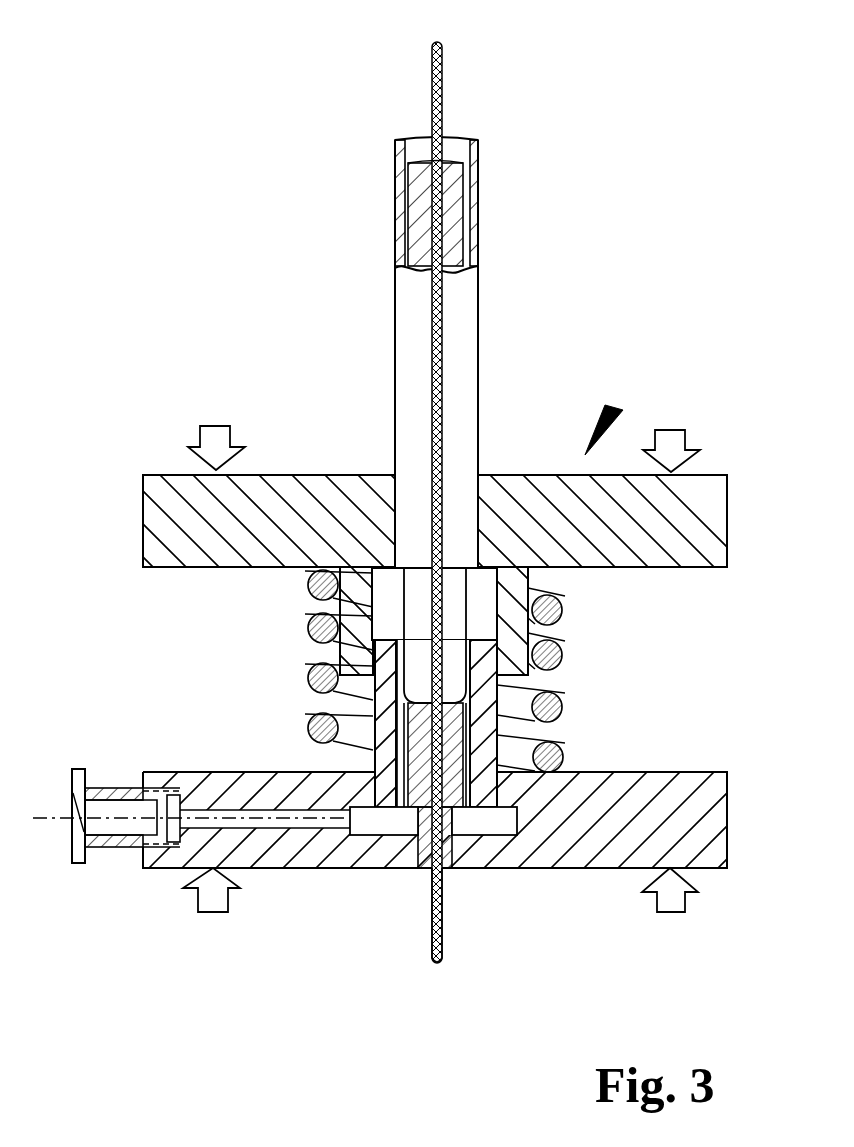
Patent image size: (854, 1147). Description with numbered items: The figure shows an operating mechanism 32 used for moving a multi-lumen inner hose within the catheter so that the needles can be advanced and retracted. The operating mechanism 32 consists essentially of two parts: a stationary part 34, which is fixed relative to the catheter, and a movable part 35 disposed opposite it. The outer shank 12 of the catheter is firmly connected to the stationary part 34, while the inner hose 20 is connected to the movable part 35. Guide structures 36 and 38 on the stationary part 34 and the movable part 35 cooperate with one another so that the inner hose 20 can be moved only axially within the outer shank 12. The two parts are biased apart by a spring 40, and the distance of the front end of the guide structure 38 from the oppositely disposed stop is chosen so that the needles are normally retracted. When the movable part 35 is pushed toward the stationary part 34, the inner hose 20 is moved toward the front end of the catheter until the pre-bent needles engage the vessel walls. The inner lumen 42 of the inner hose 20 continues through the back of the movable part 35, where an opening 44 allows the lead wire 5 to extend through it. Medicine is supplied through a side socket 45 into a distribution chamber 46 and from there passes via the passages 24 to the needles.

The lead wire 5 is at (429, 52).
The outer shank 12 is at (480, 377).
The inner hose 20 is at (470, 254).
The passages 24 is at (415, 256).
The operating mechanism 32 is at (618, 410).
The stationary part 34 is at (678, 521).
The movable part 35 is at (705, 828).
The guide structure 36 is at (513, 590).
The guide structure 38 is at (478, 688).
The spring 40 is at (312, 680).
The inner lumen 42 is at (441, 162).
The opening 44 is at (441, 866).
The side socket 45 is at (104, 790).
The distribution chamber 46 is at (380, 813).